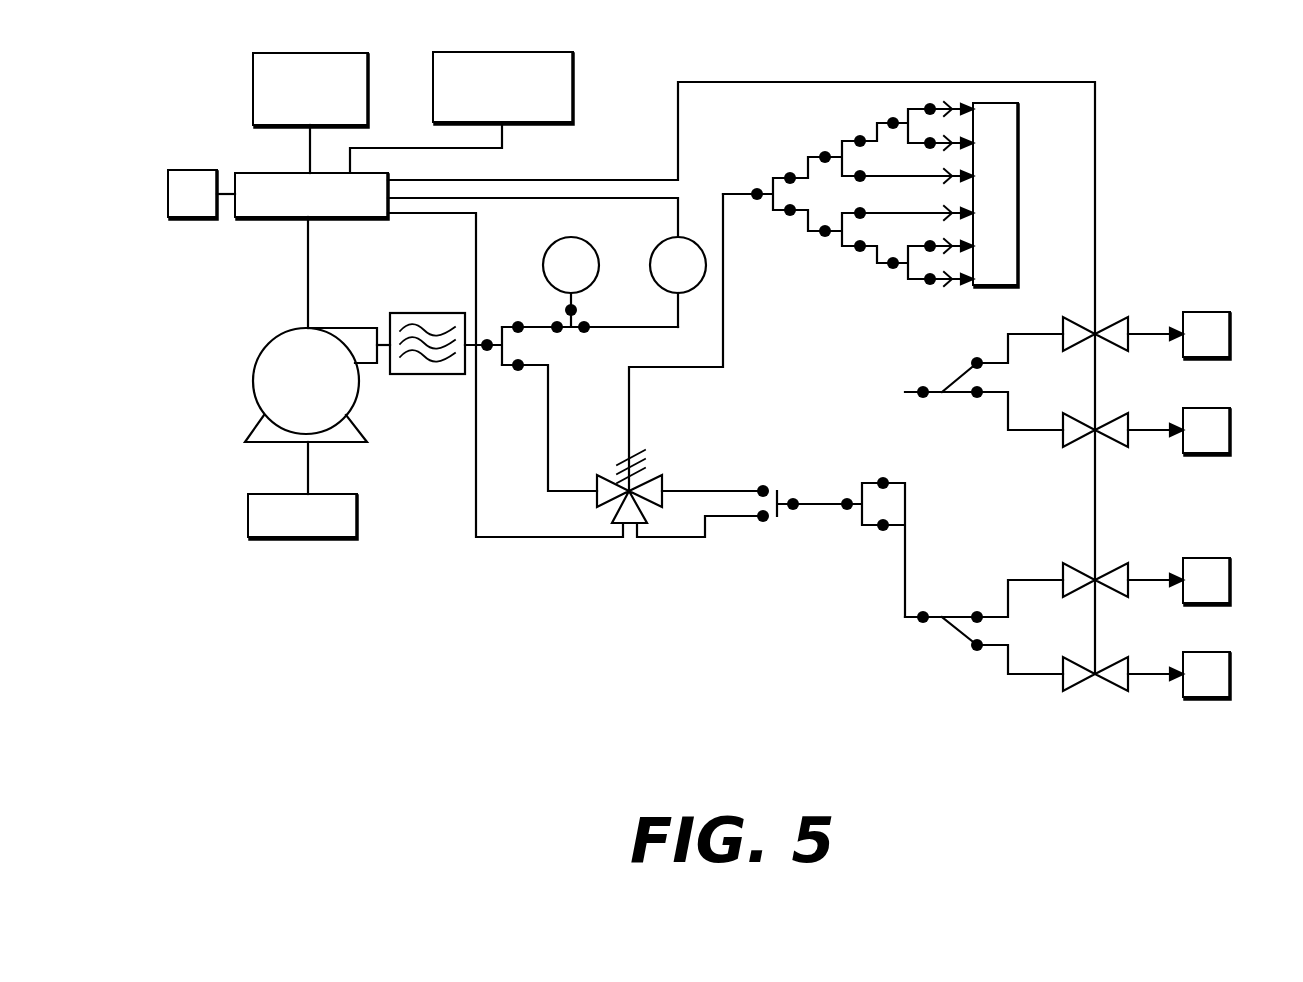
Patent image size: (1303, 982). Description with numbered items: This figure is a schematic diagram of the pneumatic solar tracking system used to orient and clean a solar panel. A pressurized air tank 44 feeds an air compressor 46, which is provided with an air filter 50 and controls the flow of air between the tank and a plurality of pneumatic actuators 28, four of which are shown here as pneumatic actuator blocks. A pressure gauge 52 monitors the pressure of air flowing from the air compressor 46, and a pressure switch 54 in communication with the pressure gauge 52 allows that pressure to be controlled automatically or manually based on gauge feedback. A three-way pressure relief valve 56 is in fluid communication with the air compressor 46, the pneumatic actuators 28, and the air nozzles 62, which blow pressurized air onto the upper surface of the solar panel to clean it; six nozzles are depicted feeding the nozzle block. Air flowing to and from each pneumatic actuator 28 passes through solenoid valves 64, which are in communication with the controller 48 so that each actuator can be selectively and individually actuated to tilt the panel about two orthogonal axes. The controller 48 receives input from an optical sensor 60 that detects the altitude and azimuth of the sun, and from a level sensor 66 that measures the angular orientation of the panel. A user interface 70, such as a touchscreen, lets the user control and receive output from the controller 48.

The pneumatic actuators 28 is at (1230, 320).
The pressurized air tank 44 is at (345, 537).
The air compressor 46 is at (268, 337).
The controller 48 is at (242, 217).
The air filter 50 is at (396, 313).
The pressure gauge 52 is at (547, 258).
The pressure switch 54 is at (699, 242).
The three-way pressure relief valve 56 is at (653, 477).
The optical sensor 60 is at (368, 53).
The air nozzle 62 is at (1018, 253).
The solenoid valves 64 is at (1128, 317).
The level sensor 66 is at (168, 218).
The user interface 70 is at (573, 52).